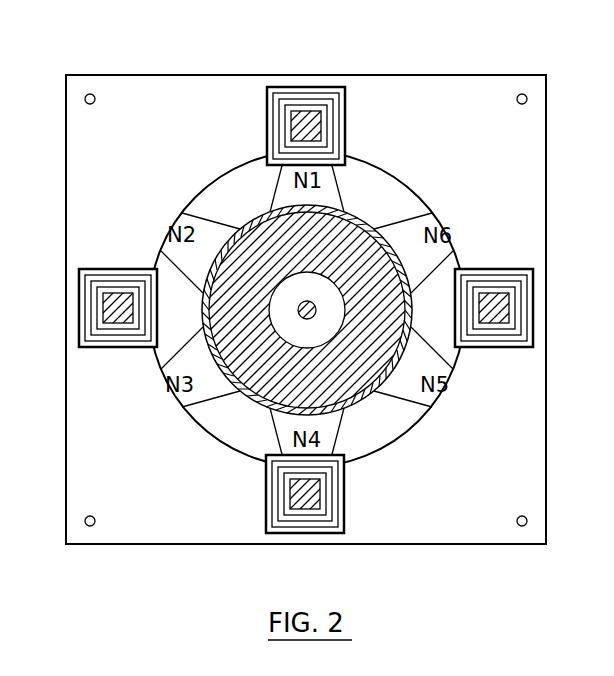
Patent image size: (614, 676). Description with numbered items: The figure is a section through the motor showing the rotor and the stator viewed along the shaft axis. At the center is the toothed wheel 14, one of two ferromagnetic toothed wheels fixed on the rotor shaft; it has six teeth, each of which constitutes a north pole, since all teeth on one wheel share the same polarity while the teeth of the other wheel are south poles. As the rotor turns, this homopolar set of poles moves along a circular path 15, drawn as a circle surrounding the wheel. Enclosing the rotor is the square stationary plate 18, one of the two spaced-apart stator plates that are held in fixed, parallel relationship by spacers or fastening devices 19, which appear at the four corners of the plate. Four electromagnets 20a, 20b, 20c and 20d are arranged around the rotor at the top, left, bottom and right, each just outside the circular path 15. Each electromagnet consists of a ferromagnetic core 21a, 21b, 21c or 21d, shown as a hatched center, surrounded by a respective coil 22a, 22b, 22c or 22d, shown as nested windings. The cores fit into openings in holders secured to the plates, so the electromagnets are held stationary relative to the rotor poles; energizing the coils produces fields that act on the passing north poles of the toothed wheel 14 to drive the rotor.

The toothed wheel 14 is at (400, 228).
The circular path 15 is at (390, 163).
The stationary plate 18 is at (186, 75).
The fastening device 19 is at (90, 94).
The electromagnet 20a is at (318, 86).
The electromagnet 20b is at (79, 308).
The electromagnet 20c is at (311, 531).
The electromagnet 20d is at (535, 306).
The ferromagnetic core 21a is at (320, 118).
The ferromagnetic core 21b is at (115, 306).
The ferromagnetic core 21c is at (306, 492).
The ferromagnetic core 21d is at (494, 300).
The coil 22a is at (270, 88).
The coil 22b is at (84, 272).
The coil 22c is at (331, 533).
The coil 22d is at (514, 338).